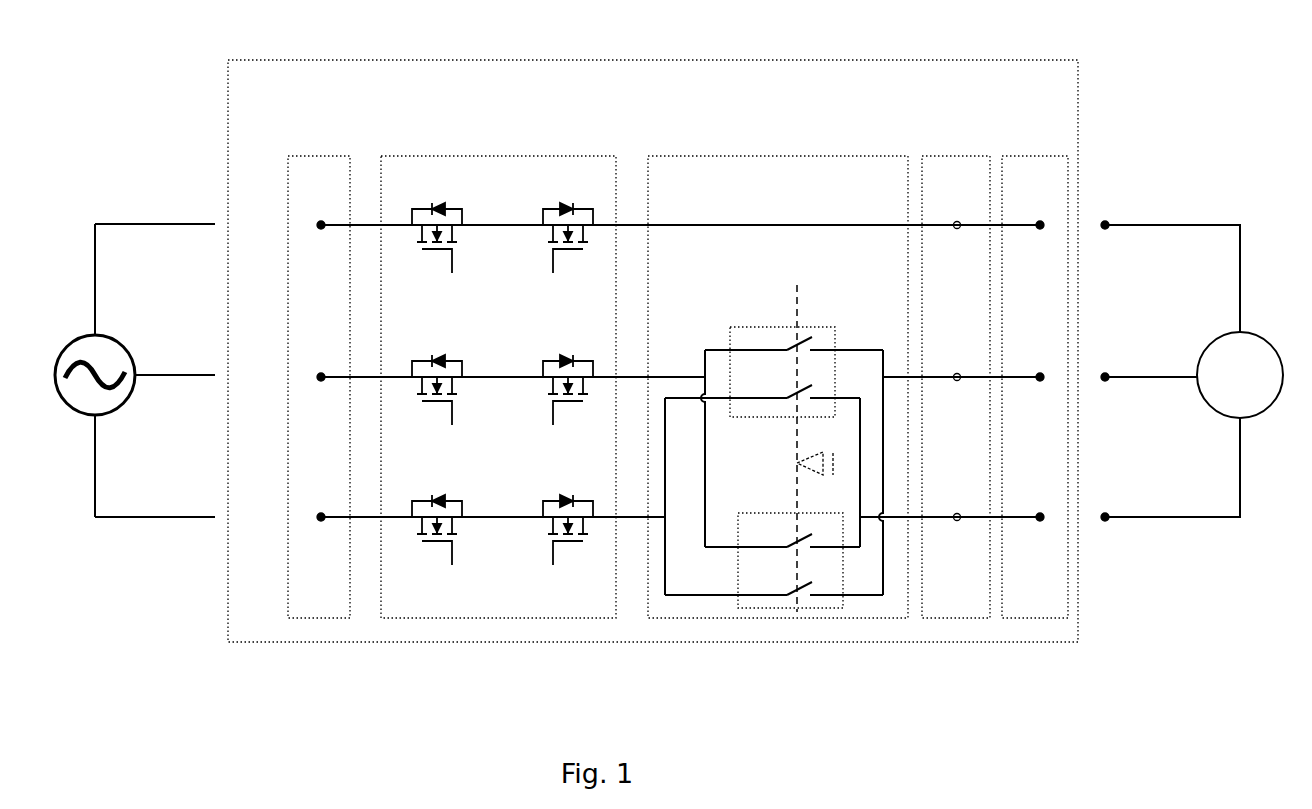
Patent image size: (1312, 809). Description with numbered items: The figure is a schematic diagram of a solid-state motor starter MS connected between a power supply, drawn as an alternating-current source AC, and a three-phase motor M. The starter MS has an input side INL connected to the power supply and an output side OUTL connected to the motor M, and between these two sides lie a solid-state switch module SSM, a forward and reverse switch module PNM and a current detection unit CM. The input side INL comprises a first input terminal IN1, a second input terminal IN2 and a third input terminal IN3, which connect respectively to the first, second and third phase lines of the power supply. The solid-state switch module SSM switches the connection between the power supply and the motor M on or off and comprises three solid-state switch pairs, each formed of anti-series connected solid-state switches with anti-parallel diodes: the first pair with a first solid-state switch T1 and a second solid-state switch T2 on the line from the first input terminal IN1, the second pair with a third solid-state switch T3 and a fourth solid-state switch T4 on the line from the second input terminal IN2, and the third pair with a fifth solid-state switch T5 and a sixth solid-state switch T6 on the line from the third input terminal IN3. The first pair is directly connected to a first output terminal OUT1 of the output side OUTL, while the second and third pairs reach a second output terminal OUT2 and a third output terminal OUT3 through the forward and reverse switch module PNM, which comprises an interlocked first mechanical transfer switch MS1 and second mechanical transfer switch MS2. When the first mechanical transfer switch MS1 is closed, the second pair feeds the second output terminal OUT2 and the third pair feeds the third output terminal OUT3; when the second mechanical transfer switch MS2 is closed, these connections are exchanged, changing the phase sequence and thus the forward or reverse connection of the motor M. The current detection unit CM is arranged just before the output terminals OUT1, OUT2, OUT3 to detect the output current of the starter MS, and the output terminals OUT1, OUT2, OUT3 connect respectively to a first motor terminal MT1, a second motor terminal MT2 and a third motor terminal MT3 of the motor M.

The solid-state motor starter MS is at (653, 330).
The input side INL is at (315, 367).
The solid-state switch module SSM is at (498, 359).
The forward and reverse switch module PNM is at (778, 359).
The current detection unit CM is at (950, 348).
The output side OUTL is at (1035, 348).
The first input terminal IN1 is at (319, 208).
The second input terminal IN2 is at (319, 360).
The third input terminal IN3 is at (319, 500).
The first solid-state switch T1 is at (437, 221).
The second solid-state switch T2 is at (568, 221).
The third solid-state switch T3 is at (437, 373).
The fourth solid-state switch T4 is at (568, 373).
The fifth solid-state switch T5 is at (437, 513).
The sixth solid-state switch T6 is at (568, 513).
The first mechanical transfer switch MS1 is at (774, 360).
The second mechanical transfer switch MS2 is at (774, 549).
The first output terminal OUT1 is at (1029, 209).
The second output terminal OUT2 is at (1029, 361).
The third output terminal OUT3 is at (1029, 501).
The first motor terminal MT1 is at (1163, 261).
The second motor terminal MT2 is at (1142, 361).
The third motor terminal MT3 is at (1163, 469).
The three-phase motor M is at (1240, 375).
The AC power source AC is at (135, 370).